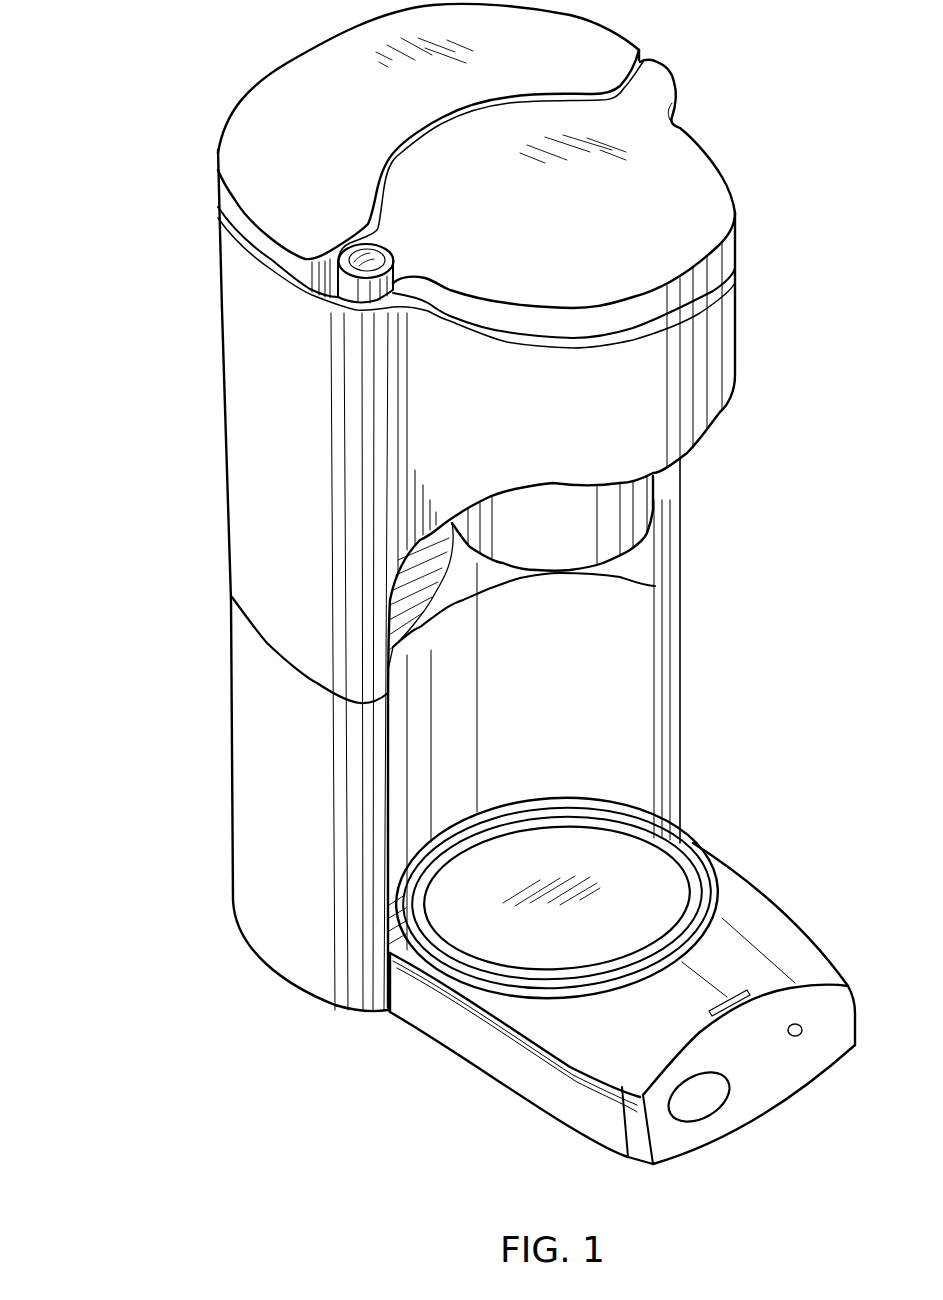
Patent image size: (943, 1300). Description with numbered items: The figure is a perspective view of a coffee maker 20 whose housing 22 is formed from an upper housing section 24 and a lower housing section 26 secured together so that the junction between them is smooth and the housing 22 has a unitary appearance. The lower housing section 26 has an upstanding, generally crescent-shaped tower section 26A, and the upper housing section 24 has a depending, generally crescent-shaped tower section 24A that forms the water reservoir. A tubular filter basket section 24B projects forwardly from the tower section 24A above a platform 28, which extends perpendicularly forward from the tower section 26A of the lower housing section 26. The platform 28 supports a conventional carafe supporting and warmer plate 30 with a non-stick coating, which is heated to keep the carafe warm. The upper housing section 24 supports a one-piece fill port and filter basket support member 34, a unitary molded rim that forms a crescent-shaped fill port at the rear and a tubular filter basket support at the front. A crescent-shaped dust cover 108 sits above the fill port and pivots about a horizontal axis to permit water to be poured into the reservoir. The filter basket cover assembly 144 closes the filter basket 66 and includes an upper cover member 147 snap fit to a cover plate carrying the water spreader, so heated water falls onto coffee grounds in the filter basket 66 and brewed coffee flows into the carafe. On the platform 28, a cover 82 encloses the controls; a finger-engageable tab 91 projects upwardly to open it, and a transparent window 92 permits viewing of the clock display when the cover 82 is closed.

The coffee maker 20 is at (446, 588).
The housing 22 is at (442, 580).
The upper housing section 24 is at (442, 580).
The tower section 24A is at (310, 550).
The tubular filter basket section 24B is at (624, 427).
The lower housing section 26 is at (275, 804).
The tower section 26A is at (311, 810).
The platform 28 is at (621, 972).
The warmer plate 30 is at (562, 850).
The one-piece fill port and filter basket support member 34 is at (254, 262).
The filter basket 66 is at (563, 558).
The cover 82 is at (749, 1081).
The finger-engageable tab 91 is at (708, 1013).
The transparent window 92 is at (697, 1108).
The dust cover 108 is at (332, 103).
The filter basket cover assembly 144 is at (715, 133).
The upper cover member 147 is at (490, 174).